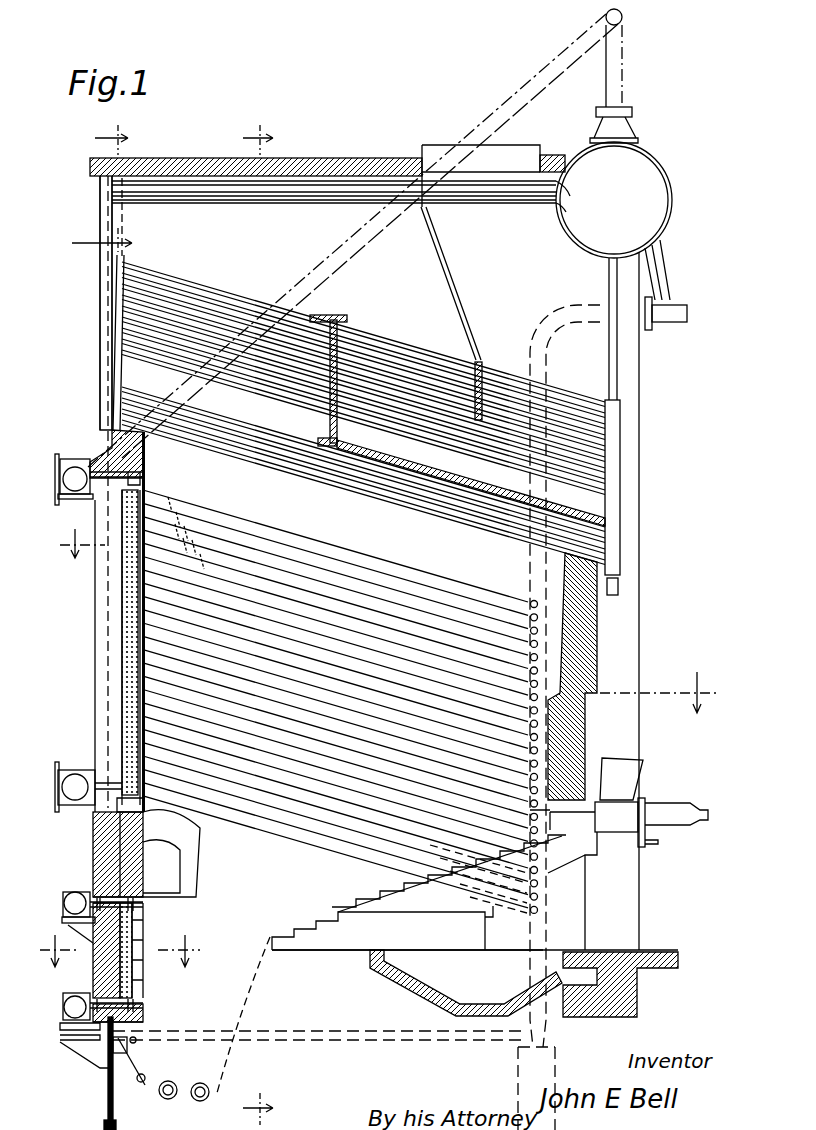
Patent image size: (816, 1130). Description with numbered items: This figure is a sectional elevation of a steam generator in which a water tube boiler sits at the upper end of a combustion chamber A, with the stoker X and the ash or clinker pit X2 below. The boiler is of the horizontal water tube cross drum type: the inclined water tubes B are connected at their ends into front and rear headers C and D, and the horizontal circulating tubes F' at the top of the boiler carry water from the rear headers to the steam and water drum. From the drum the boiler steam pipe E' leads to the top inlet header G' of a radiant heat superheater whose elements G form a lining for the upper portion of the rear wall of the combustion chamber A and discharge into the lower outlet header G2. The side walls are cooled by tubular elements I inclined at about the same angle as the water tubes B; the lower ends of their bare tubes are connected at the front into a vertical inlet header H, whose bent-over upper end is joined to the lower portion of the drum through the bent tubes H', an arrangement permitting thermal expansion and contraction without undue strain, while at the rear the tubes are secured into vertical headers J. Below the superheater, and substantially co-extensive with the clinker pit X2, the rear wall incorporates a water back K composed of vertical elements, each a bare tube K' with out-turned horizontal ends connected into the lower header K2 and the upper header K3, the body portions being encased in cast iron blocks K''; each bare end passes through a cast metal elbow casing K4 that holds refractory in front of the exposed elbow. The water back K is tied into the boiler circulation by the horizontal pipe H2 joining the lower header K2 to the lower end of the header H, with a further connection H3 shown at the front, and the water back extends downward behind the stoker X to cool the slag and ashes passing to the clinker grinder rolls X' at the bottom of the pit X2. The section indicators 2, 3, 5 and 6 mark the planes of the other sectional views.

The combustion chamber A is at (340, 701).
The inclined water tubes B is at (398, 368).
The front headers C is at (618, 460).
The rear headers D is at (100, 334).
The boiler steam pipe E' is at (401, 238).
The superheater tubes F' is at (341, 199).
The superheater elements G is at (98, 622).
The top inlet header G' is at (93, 503).
The lower outlet header G2 is at (60, 782).
The vertical inlet header H is at (542, 717).
The tubes H' is at (684, 285).
The horizontal pipe H2 is at (310, 1042).
The front bracket connection H3 is at (62, 1024).
The tubular elements I is at (410, 586).
The vertical headers J is at (110, 440).
The water back K is at (142, 910).
The bare tube K' is at (99, 874).
The fire door arch K'' is at (134, 899).
The lower horizontal header K2 is at (64, 1008).
The upper horizontal header K3 is at (63, 906).
The cast metal elbow casing K4 is at (150, 904).
The stoker X is at (419, 892).
The clinker grinder rolls X' is at (180, 1103).
The ash or clinker pit X2 is at (191, 1015).
The section line 2- 2 is at (389, 624).
The section line 3- 3 is at (120, 953).
The section line 5- 5 is at (265, 625).
The section line 6- 6 is at (102, 185).